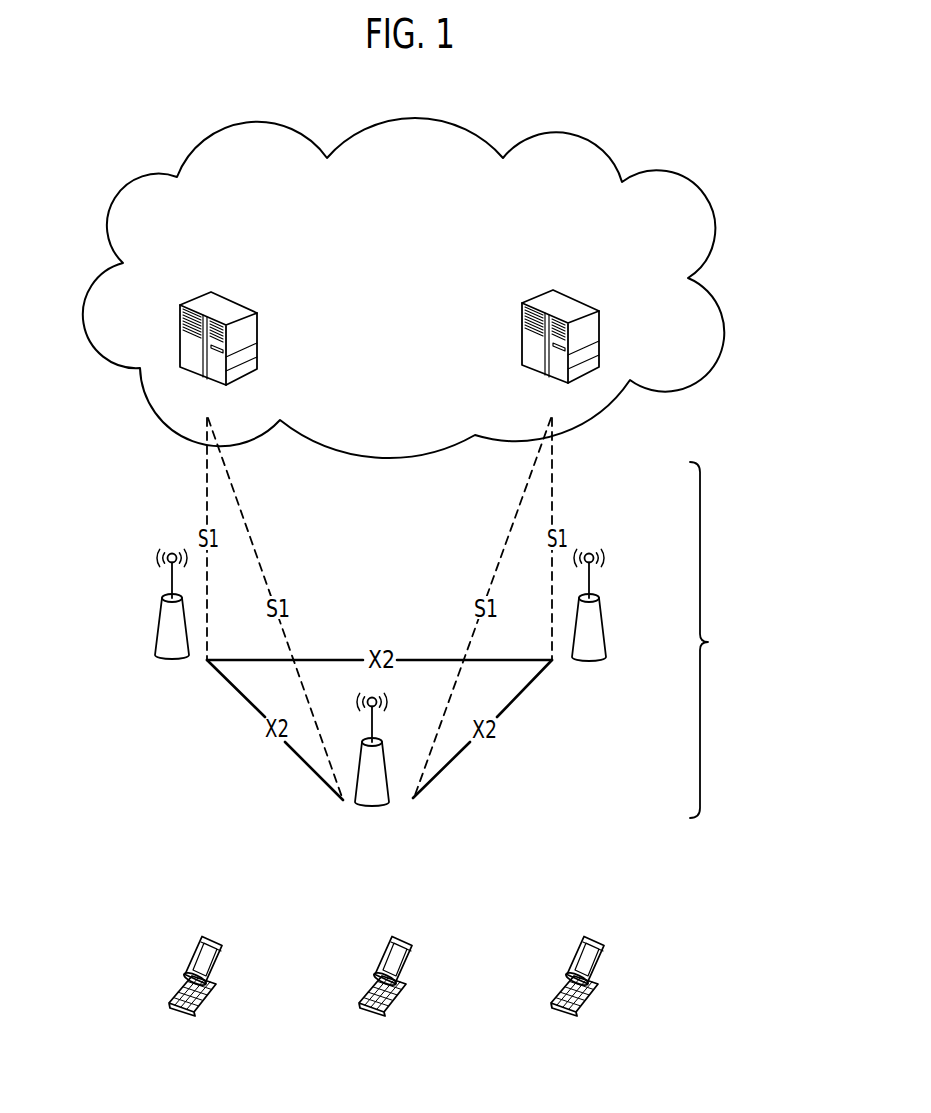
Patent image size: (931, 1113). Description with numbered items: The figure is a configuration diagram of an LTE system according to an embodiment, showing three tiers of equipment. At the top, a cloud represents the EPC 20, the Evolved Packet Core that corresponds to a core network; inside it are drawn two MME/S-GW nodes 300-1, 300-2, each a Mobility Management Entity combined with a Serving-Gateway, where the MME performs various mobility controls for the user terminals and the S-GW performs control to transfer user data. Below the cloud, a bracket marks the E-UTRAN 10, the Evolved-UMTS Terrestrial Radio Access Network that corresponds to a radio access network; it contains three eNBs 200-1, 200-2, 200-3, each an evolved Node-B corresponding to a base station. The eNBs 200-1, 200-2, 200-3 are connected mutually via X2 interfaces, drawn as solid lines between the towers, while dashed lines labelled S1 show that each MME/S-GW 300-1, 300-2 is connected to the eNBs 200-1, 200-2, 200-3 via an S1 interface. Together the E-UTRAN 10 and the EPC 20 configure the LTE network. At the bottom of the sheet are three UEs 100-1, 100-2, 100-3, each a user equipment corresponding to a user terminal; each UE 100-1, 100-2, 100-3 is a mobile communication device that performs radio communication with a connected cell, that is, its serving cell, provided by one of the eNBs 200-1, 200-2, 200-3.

The E-UTRAN 10 is at (432, 653).
The EPC 20 is at (600, 148).
The UE 100-1 is at (214, 940).
The UE 100-2 is at (404, 940).
The UE 100-3 is at (597, 941).
The eNB 200-1 is at (160, 630).
The eNB 200-2 is at (388, 782).
The eNB 200-3 is at (627, 600).
The MME/S-GW 300-1 is at (237, 300).
The MME/S-GW 300-2 is at (573, 296).